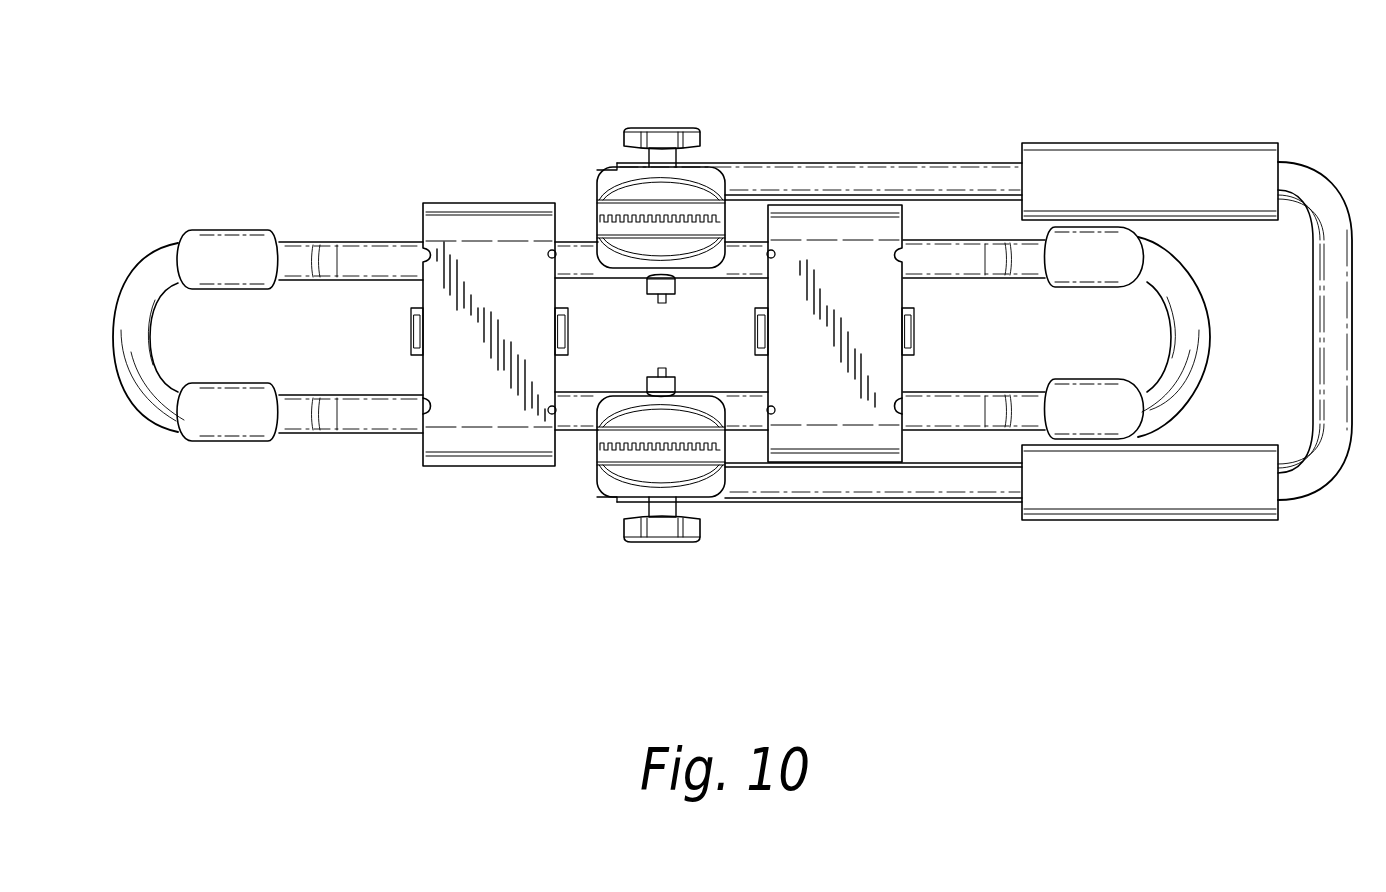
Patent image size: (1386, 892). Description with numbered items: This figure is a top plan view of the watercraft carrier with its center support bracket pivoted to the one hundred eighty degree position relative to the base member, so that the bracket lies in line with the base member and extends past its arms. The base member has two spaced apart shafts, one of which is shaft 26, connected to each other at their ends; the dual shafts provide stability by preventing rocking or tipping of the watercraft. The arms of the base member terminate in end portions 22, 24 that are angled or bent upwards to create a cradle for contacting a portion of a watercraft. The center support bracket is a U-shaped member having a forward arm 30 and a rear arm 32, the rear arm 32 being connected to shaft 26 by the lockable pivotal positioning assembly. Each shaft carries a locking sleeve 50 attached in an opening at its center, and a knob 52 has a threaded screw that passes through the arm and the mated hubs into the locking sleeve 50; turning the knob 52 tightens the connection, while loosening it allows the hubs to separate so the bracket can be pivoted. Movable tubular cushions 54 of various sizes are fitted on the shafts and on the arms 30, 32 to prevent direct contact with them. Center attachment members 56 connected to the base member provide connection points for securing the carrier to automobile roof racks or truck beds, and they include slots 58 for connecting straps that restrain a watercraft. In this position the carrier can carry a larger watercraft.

The end portion 22 is at (988, 421).
The end portion 24 is at (300, 434).
The shaft 26 is at (748, 421).
The forward arm 30 is at (986, 176).
The rear arm 32 is at (838, 486).
The locking sleeve 50 is at (647, 290).
The knob 52 is at (662, 127).
The movable tubular cushion 54 is at (1115, 162).
The center attachment member 56 is at (845, 226).
The slot 58 is at (912, 328).